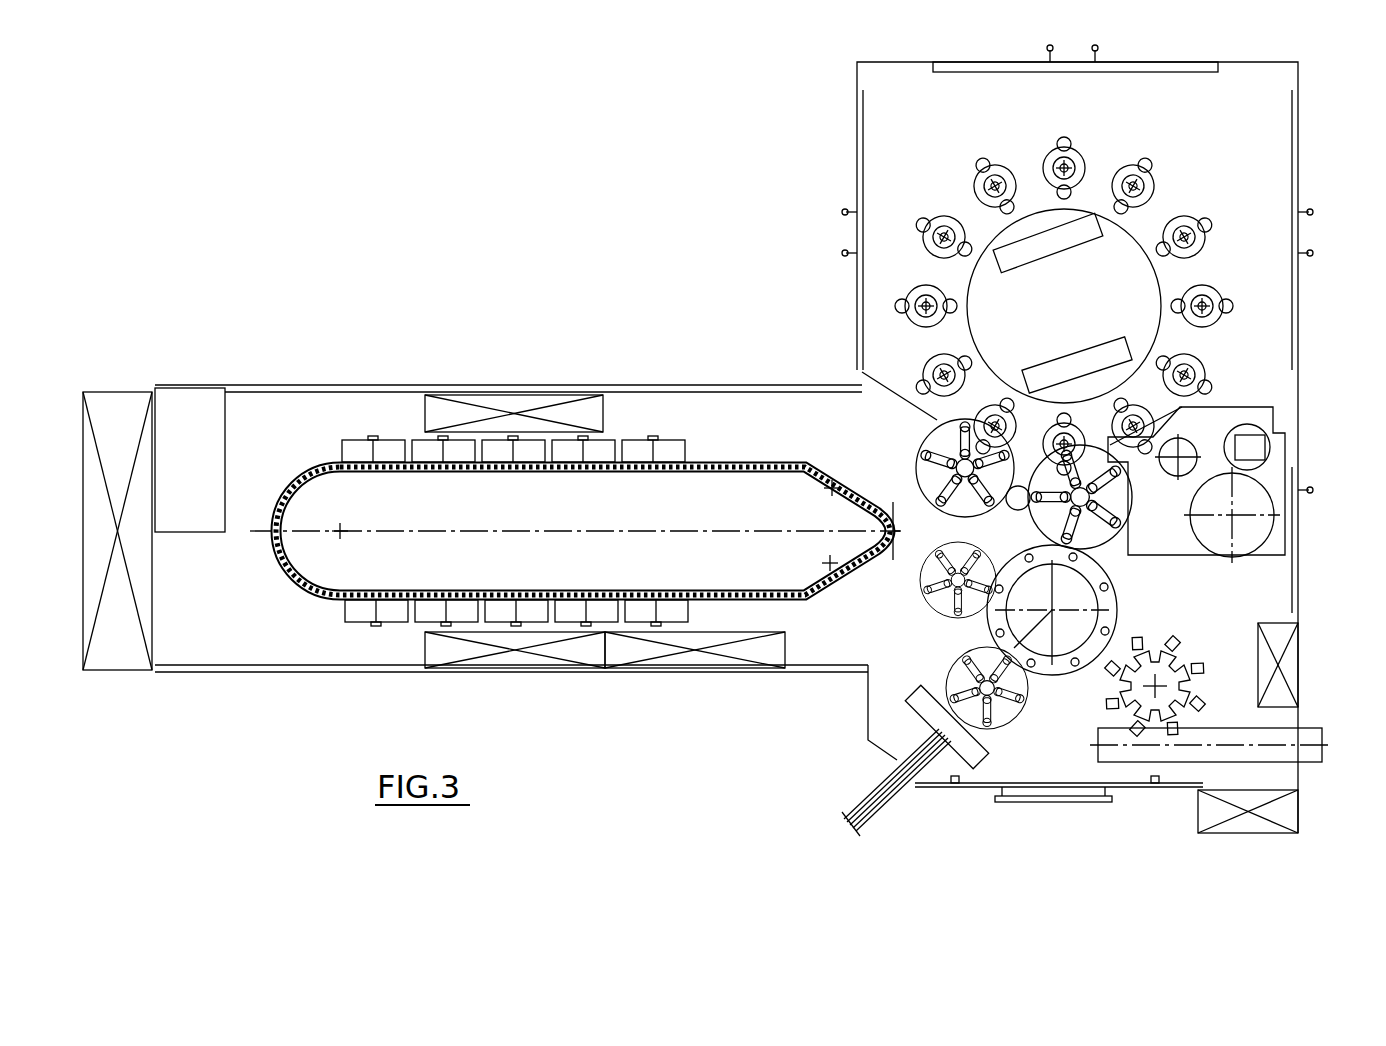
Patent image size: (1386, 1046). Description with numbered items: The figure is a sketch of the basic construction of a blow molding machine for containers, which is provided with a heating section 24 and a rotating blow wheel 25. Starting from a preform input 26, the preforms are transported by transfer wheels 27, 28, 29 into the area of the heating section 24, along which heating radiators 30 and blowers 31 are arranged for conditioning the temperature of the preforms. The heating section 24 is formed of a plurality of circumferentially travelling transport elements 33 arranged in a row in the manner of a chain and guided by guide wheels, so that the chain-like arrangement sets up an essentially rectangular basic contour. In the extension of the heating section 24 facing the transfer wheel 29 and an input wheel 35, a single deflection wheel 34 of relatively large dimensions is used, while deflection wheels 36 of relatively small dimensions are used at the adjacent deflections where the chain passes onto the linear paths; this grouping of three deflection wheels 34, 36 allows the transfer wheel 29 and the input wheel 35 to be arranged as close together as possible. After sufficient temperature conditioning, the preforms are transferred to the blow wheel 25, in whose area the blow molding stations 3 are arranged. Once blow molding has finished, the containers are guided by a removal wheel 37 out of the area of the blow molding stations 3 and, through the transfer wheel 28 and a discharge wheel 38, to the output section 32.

The blow molding station 3 is at (907, 285).
The heating section 24 is at (643, 420).
The blow wheel 25 is at (997, 225).
The preform input 26 is at (905, 797).
The transfer wheel 27 is at (1000, 730).
The transfer wheel 28 is at (1055, 672).
The transfer wheel 29 is at (938, 608).
The heating radiator 30 is at (388, 437).
The blower 31 is at (508, 397).
The output section 32 is at (1310, 753).
The transport element 33 is at (310, 592).
The deflection wheel 34 is at (340, 531).
The input wheel 35 is at (937, 418).
The deflection wheel 36 is at (832, 488).
The removal wheel 37 is at (1135, 517).
The discharge wheel 38 is at (1166, 700).